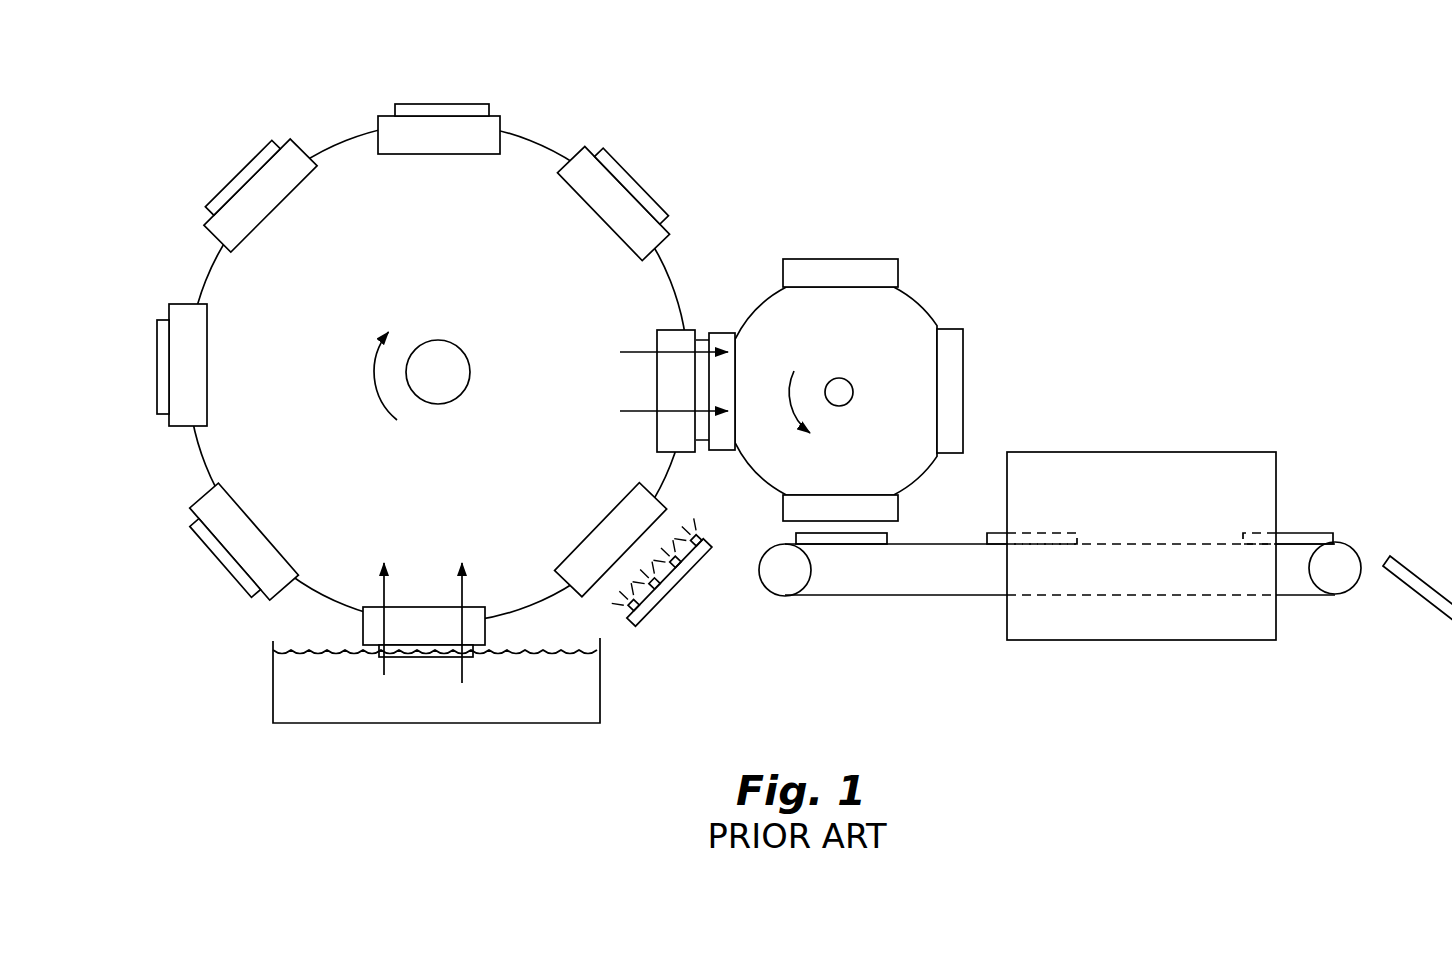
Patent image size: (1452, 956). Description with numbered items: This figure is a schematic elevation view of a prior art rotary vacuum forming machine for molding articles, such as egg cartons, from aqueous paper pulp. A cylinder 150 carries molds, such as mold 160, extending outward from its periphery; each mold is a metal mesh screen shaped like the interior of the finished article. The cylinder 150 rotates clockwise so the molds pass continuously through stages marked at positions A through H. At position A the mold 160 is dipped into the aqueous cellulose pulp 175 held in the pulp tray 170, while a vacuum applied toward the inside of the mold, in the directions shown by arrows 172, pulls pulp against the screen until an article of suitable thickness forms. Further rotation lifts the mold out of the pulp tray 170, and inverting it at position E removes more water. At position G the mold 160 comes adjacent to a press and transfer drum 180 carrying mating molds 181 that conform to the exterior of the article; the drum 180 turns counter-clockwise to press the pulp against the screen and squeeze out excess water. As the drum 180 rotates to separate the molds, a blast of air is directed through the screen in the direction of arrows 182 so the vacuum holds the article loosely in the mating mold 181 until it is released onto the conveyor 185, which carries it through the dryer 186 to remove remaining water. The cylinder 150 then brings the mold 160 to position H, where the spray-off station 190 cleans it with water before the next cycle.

The cylinder 150 is at (418, 358).
The mold 160 is at (222, 568).
The pulp tray 170 is at (387, 680).
The arrows 172 is at (426, 598).
The aqueous cellulose pulp 175 is at (400, 714).
The press and transfer drum 180 is at (884, 383).
The molds 181 is at (966, 410).
The arrows 182 is at (649, 379).
The conveyor 185 is at (898, 596).
The dryer 186 is at (1181, 451).
The spray-off station 190 is at (668, 600).